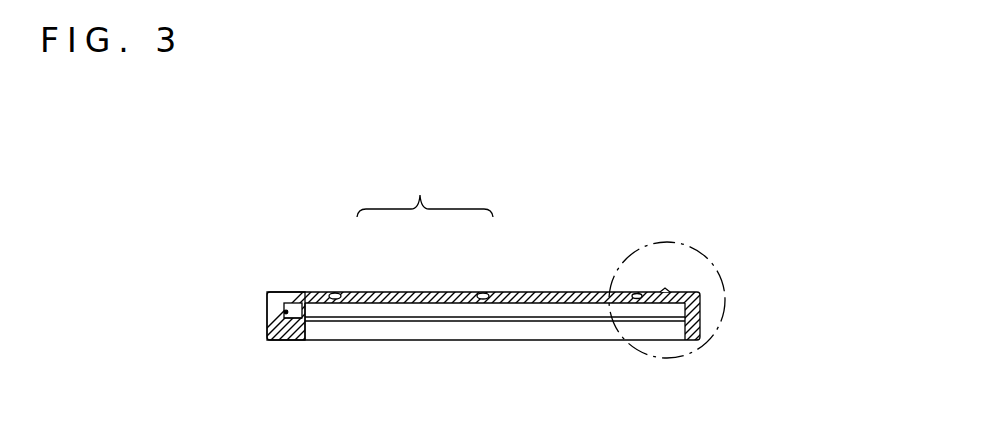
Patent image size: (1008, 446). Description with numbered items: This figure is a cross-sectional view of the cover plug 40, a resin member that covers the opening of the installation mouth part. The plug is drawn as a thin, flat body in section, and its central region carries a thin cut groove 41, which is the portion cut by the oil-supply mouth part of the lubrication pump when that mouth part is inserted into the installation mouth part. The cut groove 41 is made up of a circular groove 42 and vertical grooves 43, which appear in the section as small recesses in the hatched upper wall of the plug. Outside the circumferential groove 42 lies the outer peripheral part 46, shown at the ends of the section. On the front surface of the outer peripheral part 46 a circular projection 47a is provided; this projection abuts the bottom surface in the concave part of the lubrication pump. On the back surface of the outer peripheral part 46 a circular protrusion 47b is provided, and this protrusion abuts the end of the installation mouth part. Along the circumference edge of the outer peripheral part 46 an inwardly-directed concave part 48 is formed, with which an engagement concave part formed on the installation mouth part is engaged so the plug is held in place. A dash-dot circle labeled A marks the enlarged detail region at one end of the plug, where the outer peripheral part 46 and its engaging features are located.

The cover plug 40 is at (541, 292).
The cut groove 41 is at (425, 185).
The circular groove 42 is at (338, 293).
The vertical grooves 43 is at (483, 293).
The outer peripheral part 46 is at (283, 292).
The circular projection 47a is at (308, 292).
The circular protrusion 47b is at (306, 316).
The inwardly-directed concave part 48 is at (286, 313).
The detail region A is at (710, 266).